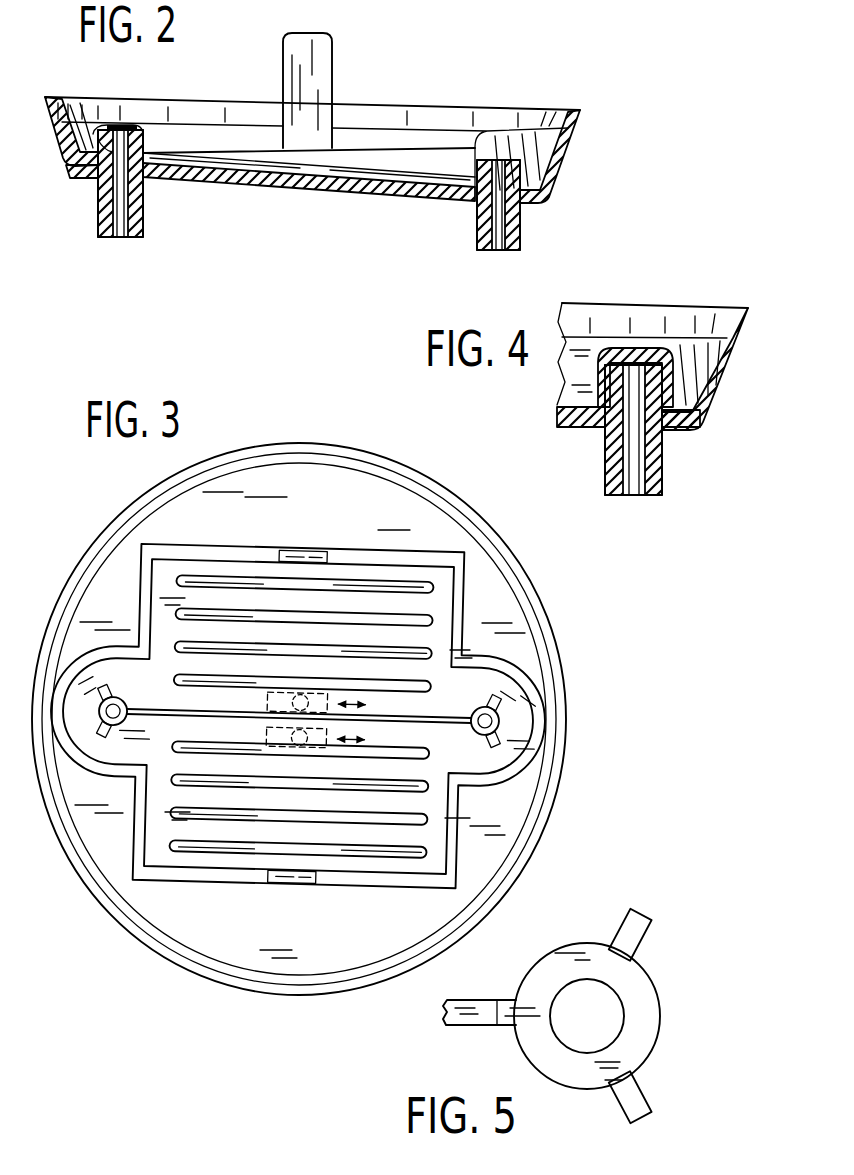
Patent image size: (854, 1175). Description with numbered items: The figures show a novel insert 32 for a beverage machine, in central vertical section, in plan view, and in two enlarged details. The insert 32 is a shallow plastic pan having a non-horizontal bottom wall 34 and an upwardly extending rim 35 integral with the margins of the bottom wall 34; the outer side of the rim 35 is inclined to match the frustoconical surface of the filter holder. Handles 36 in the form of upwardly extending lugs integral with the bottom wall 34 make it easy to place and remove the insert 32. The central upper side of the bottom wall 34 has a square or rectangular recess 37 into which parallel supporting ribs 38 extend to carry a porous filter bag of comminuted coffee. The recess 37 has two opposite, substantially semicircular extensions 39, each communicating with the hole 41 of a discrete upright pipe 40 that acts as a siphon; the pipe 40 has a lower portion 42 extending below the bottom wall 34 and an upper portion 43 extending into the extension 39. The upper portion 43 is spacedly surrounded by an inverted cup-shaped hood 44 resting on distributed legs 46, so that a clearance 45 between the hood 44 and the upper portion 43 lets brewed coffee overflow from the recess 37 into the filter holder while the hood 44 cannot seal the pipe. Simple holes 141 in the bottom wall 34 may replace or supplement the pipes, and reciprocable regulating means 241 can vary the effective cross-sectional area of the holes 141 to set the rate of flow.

In FIG. 2, the insert 32 is at (278, 200).
In FIG. 2, the bottom wall 34 is at (365, 198).
In FIG. 2, the rim 35 is at (567, 162).
In FIG. 3, the rim 35 is at (556, 623).
In FIG. 2, the handles 36 is at (333, 64).
In FIG. 3, the handles 36 is at (297, 551).
In FIG. 3, the recess 37 is at (413, 573).
In FIG. 3, the supporting ribs 38 is at (428, 590).
In FIG. 3, the semicircular extensions 39 is at (518, 705).
In FIG. 2, the pipe 40 is at (145, 211).
In FIG. 2, the hole 41 is at (498, 230).
In FIG. 3, the hole 41 is at (492, 722).
In FIG. 5, the hole 41 is at (612, 1007).
In FIG. 4, the lower portion 42 is at (663, 468).
In FIG. 2, the upper portion 43 is at (106, 143).
In FIG. 4, the upper portion 43 is at (605, 418).
In FIG. 3, the upper portion 43 is at (500, 675).
In FIG. 4, the hood 44 is at (650, 347).
In FIG. 4, the clearance 45 is at (706, 413).
In FIG. 3, the legs 46 is at (505, 740).
In FIG. 5, the legs 46 is at (633, 1076).
In FIG. 3, the holes 141 is at (304, 694).
In FIG. 3, the regulating means 241 is at (277, 698).